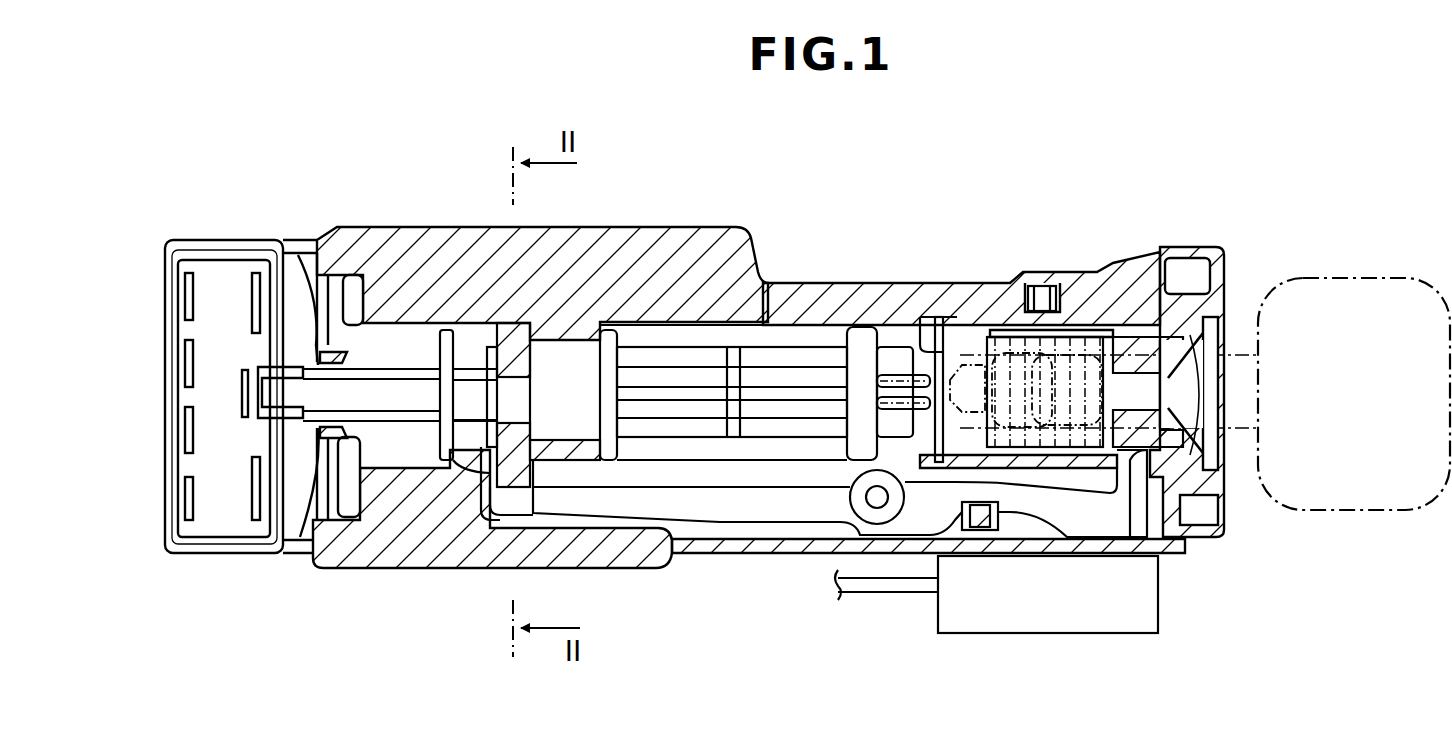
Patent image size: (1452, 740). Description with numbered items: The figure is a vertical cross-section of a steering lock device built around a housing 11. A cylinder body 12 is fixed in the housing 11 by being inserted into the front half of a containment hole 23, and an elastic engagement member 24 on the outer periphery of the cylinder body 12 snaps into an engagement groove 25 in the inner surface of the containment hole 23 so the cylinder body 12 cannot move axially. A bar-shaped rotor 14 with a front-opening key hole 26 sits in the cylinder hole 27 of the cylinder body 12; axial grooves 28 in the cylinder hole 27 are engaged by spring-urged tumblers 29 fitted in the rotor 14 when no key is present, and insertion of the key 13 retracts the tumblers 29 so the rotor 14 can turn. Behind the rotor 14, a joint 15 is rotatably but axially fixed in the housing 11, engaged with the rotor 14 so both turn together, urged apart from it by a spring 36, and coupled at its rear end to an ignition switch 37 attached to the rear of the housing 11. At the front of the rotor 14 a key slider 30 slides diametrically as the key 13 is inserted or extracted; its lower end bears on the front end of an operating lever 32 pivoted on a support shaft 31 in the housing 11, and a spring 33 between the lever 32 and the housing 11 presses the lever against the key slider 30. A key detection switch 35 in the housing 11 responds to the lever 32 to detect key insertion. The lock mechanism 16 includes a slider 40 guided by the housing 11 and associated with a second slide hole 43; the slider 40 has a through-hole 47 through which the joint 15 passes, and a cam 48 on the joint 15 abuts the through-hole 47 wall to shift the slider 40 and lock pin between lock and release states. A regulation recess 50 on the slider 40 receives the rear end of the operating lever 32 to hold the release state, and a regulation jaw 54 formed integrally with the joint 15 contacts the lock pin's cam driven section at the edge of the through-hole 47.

The housing 11 is at (717, 543).
The cylinder body 12 is at (968, 303).
The key 13 is at (1343, 278).
The rotor 14 is at (1106, 346).
The joint 15 is at (736, 352).
The lock mechanism 16 is at (460, 372).
The containment hole 23 is at (796, 335).
The elastic engagement member 24 is at (1058, 298).
The engagement groove 25 is at (1001, 312).
The key hole 26 is at (1195, 390).
The cylinder hole 27 is at (930, 317).
The grooves 28 is at (1072, 437).
The tumblers 29 is at (1030, 433).
The key slider 30 is at (1175, 497).
The support shaft 31 is at (872, 503).
The operating lever 32 is at (793, 504).
The spring 33 is at (1000, 532).
The key detection switch 35 is at (996, 594).
The spring 36 is at (888, 372).
The ignition switch 37 is at (230, 247).
The slider 40 is at (458, 478).
The second slide hole 43 is at (487, 335).
The through-hole 47 is at (512, 378).
The cam 48 is at (498, 403).
The regulation recess 50 is at (516, 476).
The regulation jaw 54 is at (566, 354).